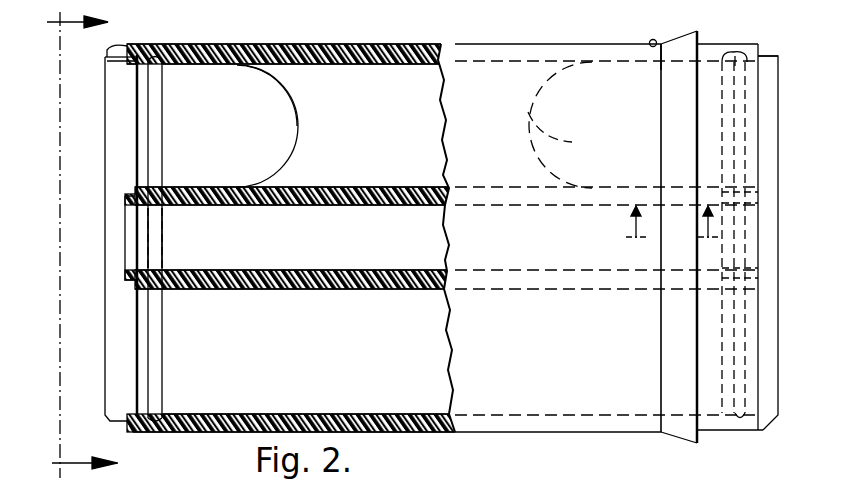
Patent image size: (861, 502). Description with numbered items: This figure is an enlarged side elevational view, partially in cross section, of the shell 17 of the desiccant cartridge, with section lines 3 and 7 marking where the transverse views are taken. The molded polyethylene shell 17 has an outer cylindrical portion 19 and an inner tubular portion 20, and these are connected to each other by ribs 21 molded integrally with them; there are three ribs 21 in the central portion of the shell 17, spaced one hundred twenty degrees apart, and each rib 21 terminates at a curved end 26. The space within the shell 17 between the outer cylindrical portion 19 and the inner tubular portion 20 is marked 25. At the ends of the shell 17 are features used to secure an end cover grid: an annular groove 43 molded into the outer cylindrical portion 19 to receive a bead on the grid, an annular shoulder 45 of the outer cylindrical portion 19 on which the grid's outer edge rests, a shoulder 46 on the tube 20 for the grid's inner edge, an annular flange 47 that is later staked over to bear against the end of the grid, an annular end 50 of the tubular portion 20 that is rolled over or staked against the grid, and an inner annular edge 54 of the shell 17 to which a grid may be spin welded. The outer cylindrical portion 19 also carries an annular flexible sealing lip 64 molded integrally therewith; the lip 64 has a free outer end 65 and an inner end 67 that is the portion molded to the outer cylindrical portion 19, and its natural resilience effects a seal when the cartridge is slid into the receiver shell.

The section line 3- 3 is at (70, 245).
The section line 7- 7 is at (672, 236).
The shell 17 is at (514, 44).
The outer cylindrical portion 19 is at (380, 45).
The inner tubular portion 20 is at (390, 188).
The ribs 21 is at (306, 138).
The chamber 25 is at (362, 342).
The curved ends 26 is at (300, 108).
The annular groove 43 is at (128, 72).
The annular shoulder 45 is at (163, 74).
The shoulder 46 is at (137, 287).
The annular flange 47 is at (122, 50).
The annular end 50 is at (130, 198).
The inner annular edge 54 is at (108, 63).
The annular flexible sealing lip 64 is at (650, 40).
The free outer end 65 is at (695, 32).
The inner end 67 is at (655, 48).